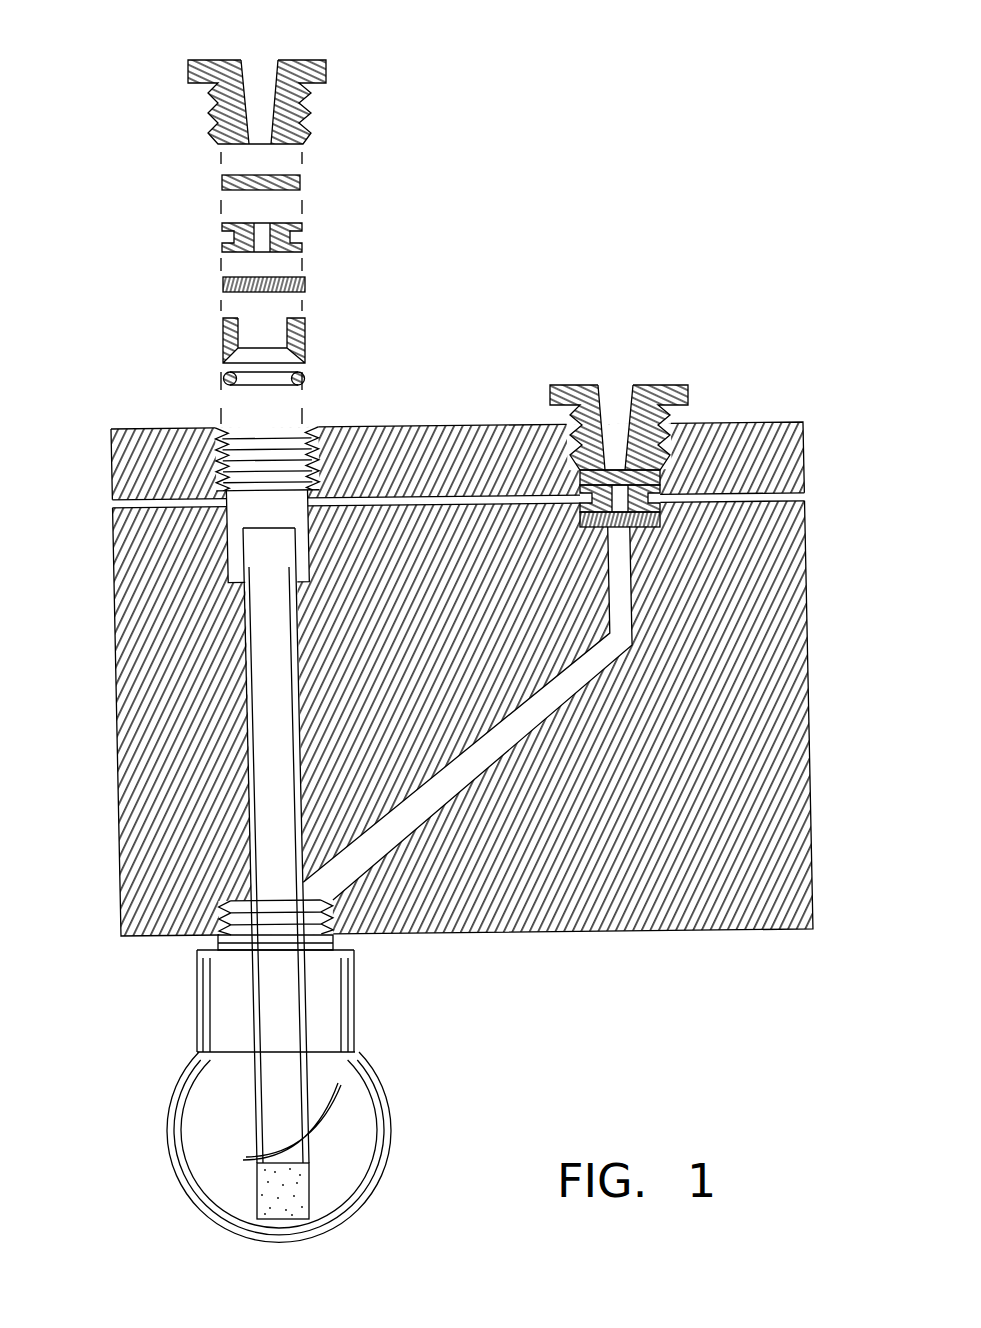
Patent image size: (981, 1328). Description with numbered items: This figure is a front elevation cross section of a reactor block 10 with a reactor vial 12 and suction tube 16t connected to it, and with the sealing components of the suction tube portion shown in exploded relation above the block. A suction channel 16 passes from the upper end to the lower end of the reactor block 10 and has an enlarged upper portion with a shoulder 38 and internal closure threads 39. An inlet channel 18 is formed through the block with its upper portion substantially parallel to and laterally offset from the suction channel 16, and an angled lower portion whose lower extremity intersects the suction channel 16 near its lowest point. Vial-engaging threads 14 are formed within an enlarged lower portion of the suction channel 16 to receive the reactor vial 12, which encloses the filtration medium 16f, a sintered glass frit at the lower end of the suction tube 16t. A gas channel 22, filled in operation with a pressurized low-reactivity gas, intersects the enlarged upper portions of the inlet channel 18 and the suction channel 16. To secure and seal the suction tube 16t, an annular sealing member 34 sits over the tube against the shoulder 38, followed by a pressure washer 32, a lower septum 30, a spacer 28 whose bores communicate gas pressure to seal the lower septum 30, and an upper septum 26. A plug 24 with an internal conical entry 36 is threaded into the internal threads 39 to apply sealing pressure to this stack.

The reactor block 10 is at (806, 592).
The reactor vial 12 is at (363, 1112).
The vial-engaging threads 14 is at (337, 930).
The suction channel 16 is at (243, 665).
The suction tube 16t is at (262, 738).
The filtration medium 16f is at (309, 1187).
The inlet channel 18 is at (440, 795).
The gas channel 22 is at (803, 494).
The plug 24 is at (327, 68).
The upper septum 26 is at (303, 182).
The spacer 28 is at (303, 226).
The lower septum 30 is at (304, 283).
The pressure washer 32 is at (306, 328).
The annular sealing member 34 is at (237, 388).
The internal conical entry 36 is at (248, 68).
The shoulder 38 is at (240, 527).
The internal closure threads 39 is at (224, 425).